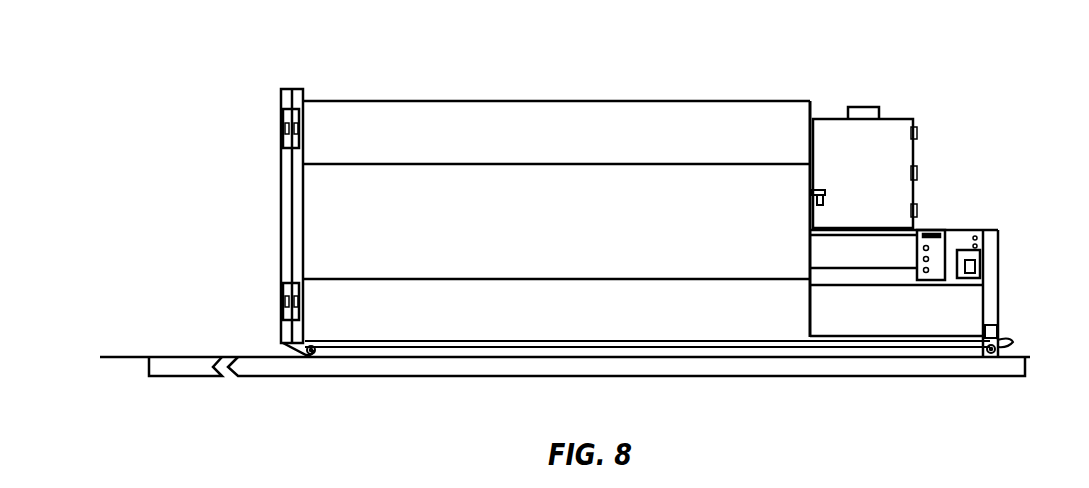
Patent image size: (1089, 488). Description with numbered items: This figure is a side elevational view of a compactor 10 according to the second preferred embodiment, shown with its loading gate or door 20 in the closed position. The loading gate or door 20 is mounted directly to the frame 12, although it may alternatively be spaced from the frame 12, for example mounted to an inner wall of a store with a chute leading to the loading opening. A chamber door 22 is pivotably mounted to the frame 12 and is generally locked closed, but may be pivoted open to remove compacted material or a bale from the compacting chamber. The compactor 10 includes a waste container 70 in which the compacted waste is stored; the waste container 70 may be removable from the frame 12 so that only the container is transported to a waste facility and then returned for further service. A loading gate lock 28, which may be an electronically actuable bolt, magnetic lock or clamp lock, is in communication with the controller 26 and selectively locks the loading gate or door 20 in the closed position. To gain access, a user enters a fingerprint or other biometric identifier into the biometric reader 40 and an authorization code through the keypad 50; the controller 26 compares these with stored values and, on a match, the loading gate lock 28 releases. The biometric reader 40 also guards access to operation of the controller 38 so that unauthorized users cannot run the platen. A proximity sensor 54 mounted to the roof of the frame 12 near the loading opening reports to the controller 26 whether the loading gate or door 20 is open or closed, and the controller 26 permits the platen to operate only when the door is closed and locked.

The compactor 10 is at (487, 73).
The frame 12 is at (842, 315).
The loading gate or door 20 is at (886, 158).
The chamber door 22 is at (282, 218).
The controller (control panel) 26 is at (958, 236).
The loading gate lock 28 is at (818, 190).
The controller 38 is at (938, 270).
The biometric reader 40 is at (978, 254).
The keypad 50 is at (970, 274).
The proximity sensor 54 is at (862, 110).
The waste container 70 is at (427, 303).